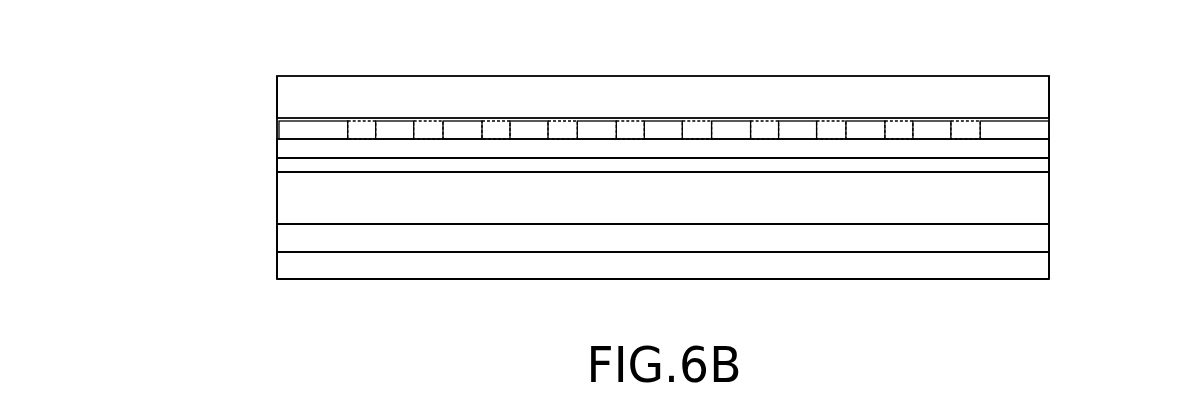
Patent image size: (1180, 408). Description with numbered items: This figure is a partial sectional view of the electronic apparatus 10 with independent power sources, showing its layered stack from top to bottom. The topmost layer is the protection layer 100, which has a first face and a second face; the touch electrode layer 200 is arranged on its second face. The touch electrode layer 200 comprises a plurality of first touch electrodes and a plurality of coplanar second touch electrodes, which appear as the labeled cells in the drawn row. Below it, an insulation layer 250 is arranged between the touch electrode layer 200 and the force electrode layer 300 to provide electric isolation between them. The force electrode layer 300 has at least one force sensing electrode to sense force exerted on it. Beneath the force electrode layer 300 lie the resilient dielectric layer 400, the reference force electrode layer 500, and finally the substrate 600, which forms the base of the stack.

The electronic apparatus 10 is at (649, 26).
The protection layer 100 is at (1045, 98).
The touch electrode layer 200 is at (1045, 128).
The insulation layer 250 is at (1045, 148).
The force electrode layer 300 is at (1045, 167).
The resilient dielectric layer 400 is at (1045, 201).
The reference force electrode layer 500 is at (1045, 239).
The substrate 600 is at (1045, 266).